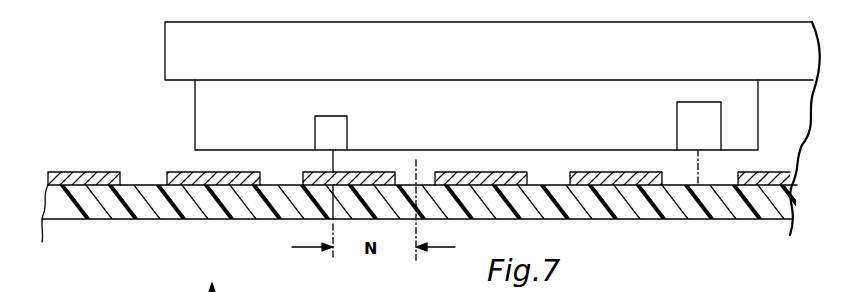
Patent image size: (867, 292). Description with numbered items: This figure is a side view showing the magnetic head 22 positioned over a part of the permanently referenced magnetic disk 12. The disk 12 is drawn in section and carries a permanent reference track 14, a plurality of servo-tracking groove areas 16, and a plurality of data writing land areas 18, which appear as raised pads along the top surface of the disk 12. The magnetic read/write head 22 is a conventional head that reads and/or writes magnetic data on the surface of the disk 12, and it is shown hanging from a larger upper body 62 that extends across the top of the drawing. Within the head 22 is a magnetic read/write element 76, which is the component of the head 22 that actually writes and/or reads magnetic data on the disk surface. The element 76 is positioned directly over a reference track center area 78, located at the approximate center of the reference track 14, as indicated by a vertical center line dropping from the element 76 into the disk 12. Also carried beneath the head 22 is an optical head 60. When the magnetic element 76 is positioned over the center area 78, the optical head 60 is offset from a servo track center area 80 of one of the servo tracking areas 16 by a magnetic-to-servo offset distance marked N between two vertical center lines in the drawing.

The disk 12 is at (145, 226).
The permanent reference track 14 is at (690, 191).
The servo-tracking areas 16 is at (302, 181).
The data writing areas 18 is at (172, 172).
The magnetic read/write head 22 is at (504, 121).
The optical head 60 is at (347, 131).
The upper body 62 is at (496, 63).
The magnetic read/write element 76 is at (711, 133).
The reference track center area 78 is at (705, 192).
The servo track center area 80 is at (437, 190).